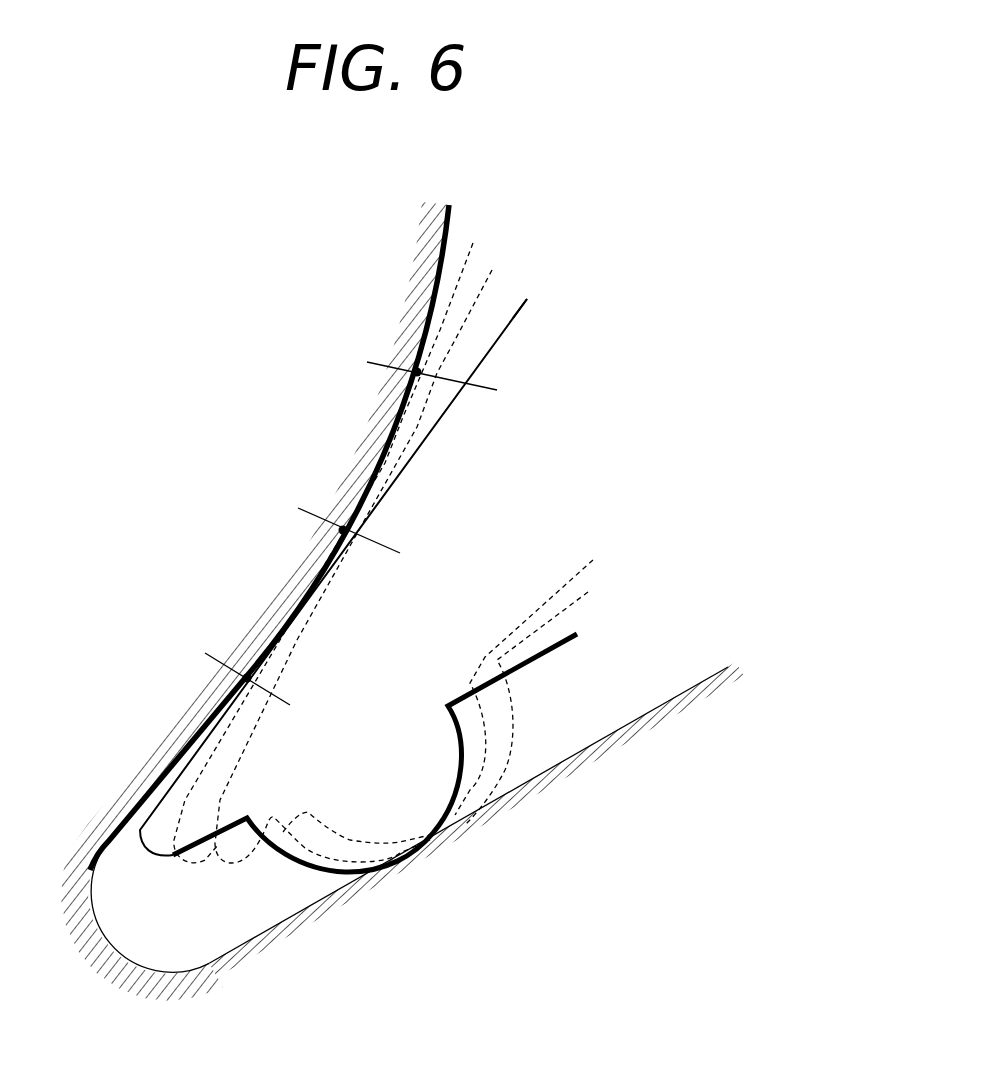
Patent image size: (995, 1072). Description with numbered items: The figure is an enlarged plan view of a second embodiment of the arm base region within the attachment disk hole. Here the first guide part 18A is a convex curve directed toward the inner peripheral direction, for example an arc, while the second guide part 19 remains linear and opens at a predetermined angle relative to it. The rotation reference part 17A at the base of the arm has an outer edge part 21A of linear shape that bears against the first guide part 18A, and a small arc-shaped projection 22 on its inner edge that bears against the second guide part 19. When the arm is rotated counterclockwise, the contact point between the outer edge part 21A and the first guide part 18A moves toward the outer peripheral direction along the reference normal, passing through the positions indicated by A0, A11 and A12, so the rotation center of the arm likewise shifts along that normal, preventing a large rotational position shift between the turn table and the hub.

The rotation reference part 17A is at (532, 338).
The first guide part 18A is at (450, 227).
The second guide part 19 is at (680, 693).
The outer edge part 21A is at (513, 312).
The projection 22 is at (318, 862).
The contact point position A12 is at (417, 372).
The contact point position A11 is at (343, 530).
The contact point position A0 is at (247, 678).